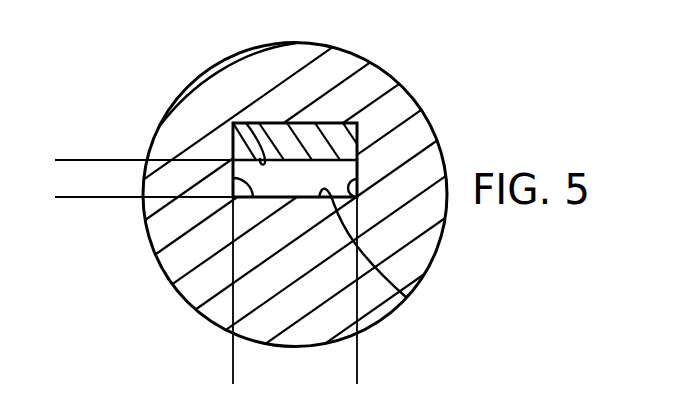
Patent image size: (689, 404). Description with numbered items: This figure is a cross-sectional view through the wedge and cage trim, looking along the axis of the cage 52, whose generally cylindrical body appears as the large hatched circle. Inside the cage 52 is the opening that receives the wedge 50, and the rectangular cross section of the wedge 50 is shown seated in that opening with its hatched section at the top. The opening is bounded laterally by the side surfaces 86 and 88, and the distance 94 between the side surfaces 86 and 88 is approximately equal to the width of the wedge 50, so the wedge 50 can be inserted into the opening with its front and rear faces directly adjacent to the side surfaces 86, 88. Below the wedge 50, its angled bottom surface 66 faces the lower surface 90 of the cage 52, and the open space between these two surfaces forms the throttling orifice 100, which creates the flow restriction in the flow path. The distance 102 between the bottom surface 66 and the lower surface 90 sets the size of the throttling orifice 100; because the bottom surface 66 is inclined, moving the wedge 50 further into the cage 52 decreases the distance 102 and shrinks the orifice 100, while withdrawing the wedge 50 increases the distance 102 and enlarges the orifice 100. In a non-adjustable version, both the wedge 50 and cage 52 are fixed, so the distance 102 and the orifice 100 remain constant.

The wedge-shaped member 50 is at (354, 133).
The cage 52 is at (298, 42).
The bottom surface 66 is at (246, 123).
The side surface 86 is at (356, 198).
The side surface 88 is at (251, 198).
The lower surface 90 is at (405, 296).
The distance between side surfaces 94 is at (357, 373).
The throttling orifice 100 is at (313, 194).
The distance between surfaces 102 is at (69, 197).